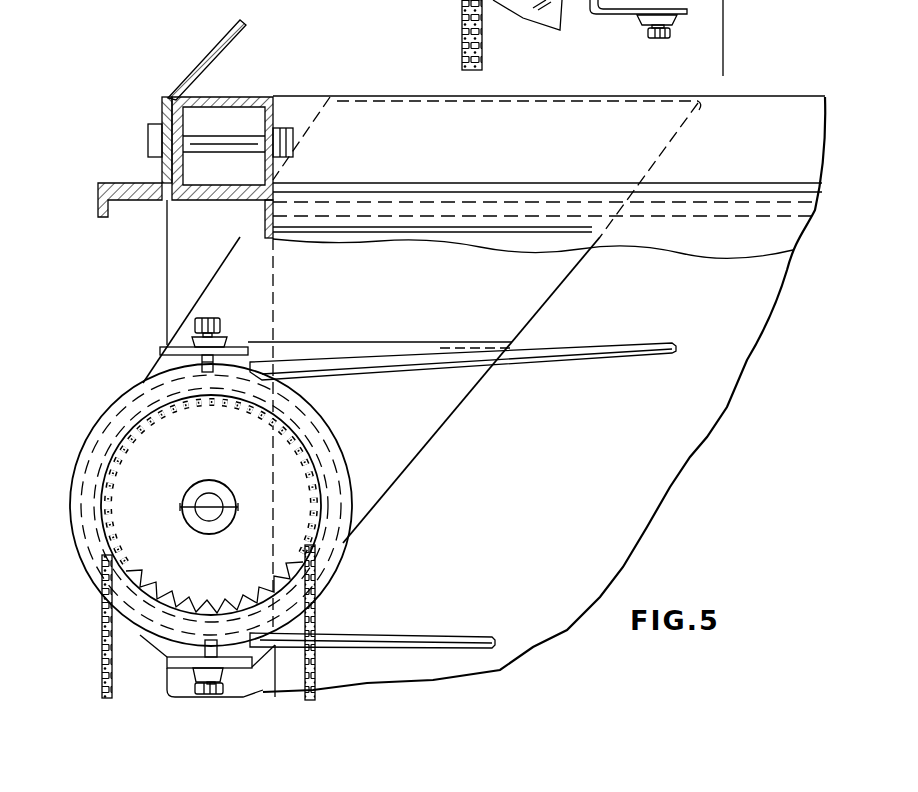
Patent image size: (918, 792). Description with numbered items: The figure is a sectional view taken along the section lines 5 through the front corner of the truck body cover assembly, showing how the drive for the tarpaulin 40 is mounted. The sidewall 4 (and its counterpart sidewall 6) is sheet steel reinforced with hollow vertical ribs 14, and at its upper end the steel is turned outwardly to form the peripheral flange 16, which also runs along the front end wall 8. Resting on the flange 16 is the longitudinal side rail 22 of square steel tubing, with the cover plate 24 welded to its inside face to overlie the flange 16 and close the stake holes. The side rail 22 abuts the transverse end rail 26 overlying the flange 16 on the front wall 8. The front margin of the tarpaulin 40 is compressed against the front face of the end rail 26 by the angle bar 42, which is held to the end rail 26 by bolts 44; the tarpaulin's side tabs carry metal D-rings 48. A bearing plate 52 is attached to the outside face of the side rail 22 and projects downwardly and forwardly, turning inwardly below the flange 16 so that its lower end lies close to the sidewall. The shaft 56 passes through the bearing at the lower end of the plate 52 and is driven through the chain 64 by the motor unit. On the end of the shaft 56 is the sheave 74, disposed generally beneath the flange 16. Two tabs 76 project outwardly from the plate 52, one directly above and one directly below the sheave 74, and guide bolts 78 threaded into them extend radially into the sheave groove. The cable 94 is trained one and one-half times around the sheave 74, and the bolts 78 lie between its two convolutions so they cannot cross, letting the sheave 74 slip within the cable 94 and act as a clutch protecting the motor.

The sidewall 4 is at (702, 423).
The section line 5 is at (728, 53).
The sidewall 6 is at (767, 248).
The front end wall 8 is at (257, 207).
The vertical rib 14 is at (183, 280).
The peripheral flange 16 is at (120, 203).
The longitudinal side rail 22 is at (803, 132).
The longitudinal cover plate 24 is at (780, 190).
The transverse end rail 26 is at (250, 98).
The tarpaulin 40 is at (208, 53).
The angle bar 42 is at (162, 105).
The bolt 44 is at (215, 133).
The D-ring 48 is at (12, 11).
The bearing plate 52 is at (543, 277).
The shaft 56 is at (198, 515).
The chain 64 is at (102, 658).
The sheave 74 is at (373, 430).
The tab 76 is at (247, 353).
The guide bolt 78 is at (215, 313).
The cable 94 is at (607, 353).